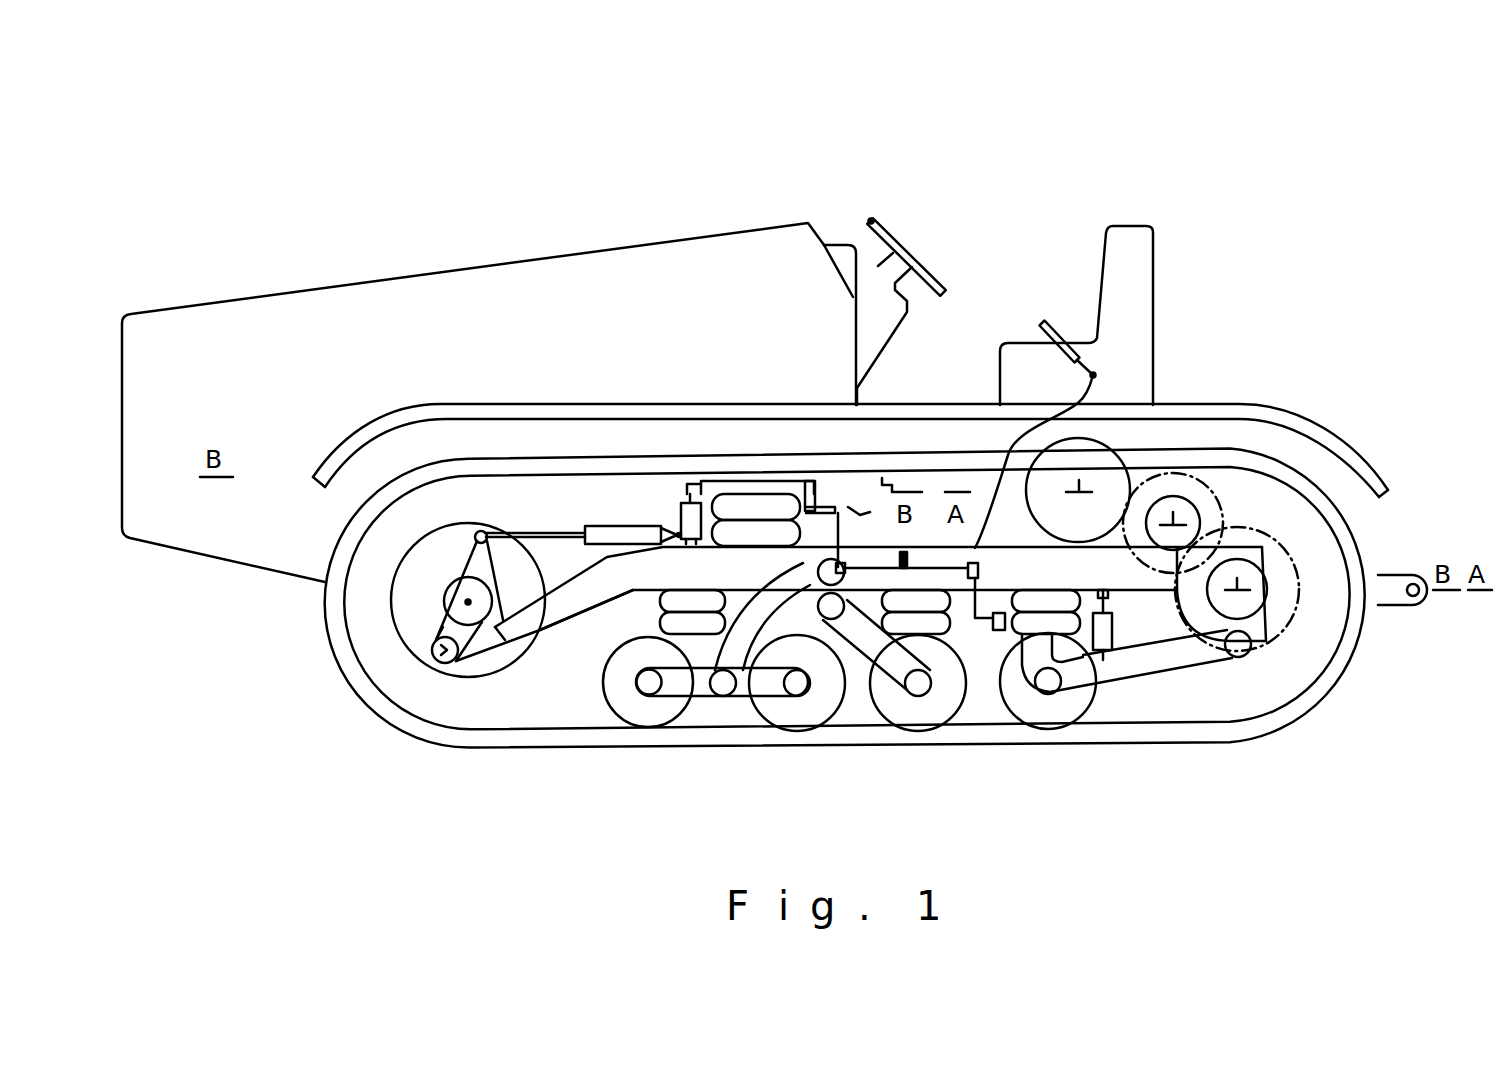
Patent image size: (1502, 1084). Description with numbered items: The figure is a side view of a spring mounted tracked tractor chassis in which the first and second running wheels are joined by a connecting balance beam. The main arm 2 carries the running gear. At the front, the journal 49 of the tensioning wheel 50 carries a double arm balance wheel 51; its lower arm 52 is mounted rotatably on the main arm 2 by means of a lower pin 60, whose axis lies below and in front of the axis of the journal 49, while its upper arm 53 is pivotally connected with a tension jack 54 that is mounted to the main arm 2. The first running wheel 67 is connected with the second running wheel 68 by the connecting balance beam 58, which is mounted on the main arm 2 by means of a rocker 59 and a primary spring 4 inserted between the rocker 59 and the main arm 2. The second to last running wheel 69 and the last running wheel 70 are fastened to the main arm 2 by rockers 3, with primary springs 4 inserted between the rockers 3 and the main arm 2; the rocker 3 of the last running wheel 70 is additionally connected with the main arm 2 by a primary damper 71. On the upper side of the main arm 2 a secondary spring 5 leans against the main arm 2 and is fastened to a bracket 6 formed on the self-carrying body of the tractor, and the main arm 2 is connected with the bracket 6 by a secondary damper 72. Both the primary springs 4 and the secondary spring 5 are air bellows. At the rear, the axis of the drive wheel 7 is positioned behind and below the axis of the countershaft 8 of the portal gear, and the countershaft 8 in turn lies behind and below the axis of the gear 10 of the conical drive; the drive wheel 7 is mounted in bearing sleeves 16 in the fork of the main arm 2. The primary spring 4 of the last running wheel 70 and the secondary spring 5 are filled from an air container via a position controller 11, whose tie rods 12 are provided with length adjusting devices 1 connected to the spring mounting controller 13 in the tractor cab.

The length adjusting devices 1 is at (847, 553).
The main arm 2 is at (522, 637).
The rockers 3 is at (893, 660).
The primary springs 4 is at (910, 602).
The secondary spring 5 is at (747, 507).
The bracket 6 is at (767, 490).
The drive wheel 7 is at (1312, 648).
The countershaft 8 is at (1175, 505).
The gear 10 is at (1078, 490).
The position controller 11 is at (820, 500).
The tie rods 12 is at (848, 507).
The spring mounting controller 13 is at (1045, 324).
The bearing sleeves 16 is at (1265, 548).
The journal 49 is at (466, 603).
The tensioning wheel 50 is at (435, 700).
The double arm balance wheel 51 is at (503, 620).
The lower arm 52 is at (427, 650).
The upper arm 53 is at (457, 556).
The tension jack 54 is at (619, 535).
The connecting balance beam 58 is at (698, 623).
The rocker 59 is at (763, 716).
The lower pin 60 is at (443, 627).
The first running wheel 67 is at (613, 683).
The second running wheel 68 is at (812, 717).
The second to last running wheel 69 is at (937, 710).
The last running wheel 70 is at (1075, 688).
The primary damper 71 is at (1143, 655).
The secondary damper 72 is at (677, 535).